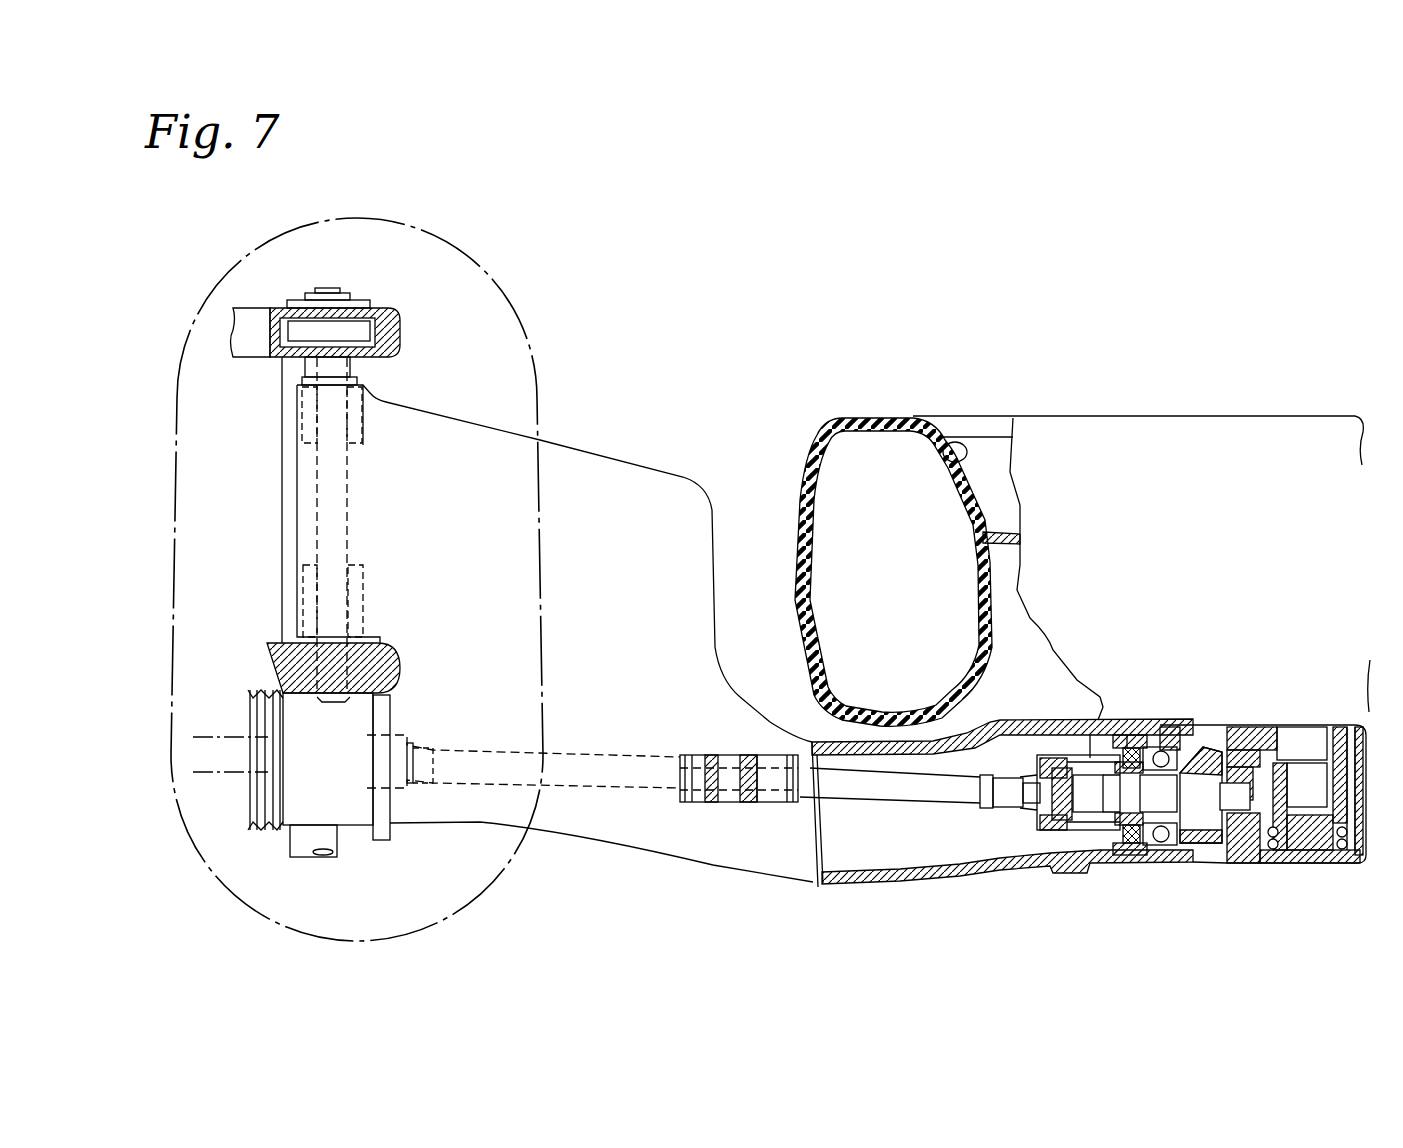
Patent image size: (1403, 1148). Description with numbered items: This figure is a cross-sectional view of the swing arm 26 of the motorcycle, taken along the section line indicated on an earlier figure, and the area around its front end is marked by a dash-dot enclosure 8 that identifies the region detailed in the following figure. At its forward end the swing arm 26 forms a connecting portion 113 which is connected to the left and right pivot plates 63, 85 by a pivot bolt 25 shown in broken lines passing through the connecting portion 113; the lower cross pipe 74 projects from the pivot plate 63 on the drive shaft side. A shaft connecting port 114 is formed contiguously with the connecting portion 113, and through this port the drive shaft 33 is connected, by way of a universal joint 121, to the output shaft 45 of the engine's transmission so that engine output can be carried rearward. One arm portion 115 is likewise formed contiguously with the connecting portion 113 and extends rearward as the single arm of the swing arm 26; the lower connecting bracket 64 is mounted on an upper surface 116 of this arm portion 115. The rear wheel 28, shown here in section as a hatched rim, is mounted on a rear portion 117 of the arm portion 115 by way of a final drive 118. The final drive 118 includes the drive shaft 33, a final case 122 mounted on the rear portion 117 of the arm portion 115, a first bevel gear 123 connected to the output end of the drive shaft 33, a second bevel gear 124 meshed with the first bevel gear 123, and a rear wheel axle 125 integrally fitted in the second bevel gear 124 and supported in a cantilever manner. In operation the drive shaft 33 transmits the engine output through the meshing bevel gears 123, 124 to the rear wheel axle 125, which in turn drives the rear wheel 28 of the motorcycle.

The enclosure region of FIG. 8 is at (520, 318).
The pivot plate 85 is at (395, 312).
The swing arm 26 is at (466, 402).
The connecting portion 113 is at (297, 503).
The pivot bolt 25 is at (317, 531).
The cross pipe (lower cross pipe) 74 is at (282, 589).
The pivot plate 63 is at (280, 673).
The output shaft 45 is at (210, 773).
The shaft connecting port 114 is at (395, 823).
The universal joint 121 is at (397, 810).
The upper surface 116 is at (623, 817).
The lower connecting bracket 64 is at (692, 803).
The arm portion 115 is at (797, 884).
The drive shaft 33 is at (935, 805).
The rear wheel 28 is at (875, 415).
The rear portion 117 is at (1063, 873).
The final case 122 is at (1123, 868).
The final drive 118 is at (1177, 876).
The second bevel gear 124 is at (1197, 725).
The first bevel gear 123 is at (1213, 867).
The rear wheel axle 125 is at (1307, 843).